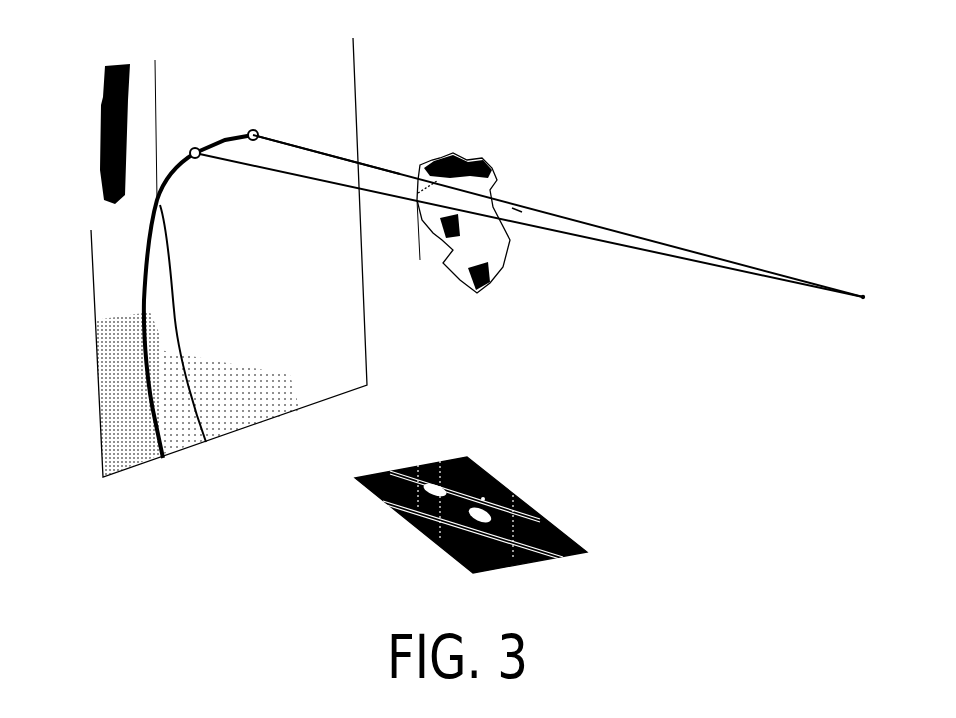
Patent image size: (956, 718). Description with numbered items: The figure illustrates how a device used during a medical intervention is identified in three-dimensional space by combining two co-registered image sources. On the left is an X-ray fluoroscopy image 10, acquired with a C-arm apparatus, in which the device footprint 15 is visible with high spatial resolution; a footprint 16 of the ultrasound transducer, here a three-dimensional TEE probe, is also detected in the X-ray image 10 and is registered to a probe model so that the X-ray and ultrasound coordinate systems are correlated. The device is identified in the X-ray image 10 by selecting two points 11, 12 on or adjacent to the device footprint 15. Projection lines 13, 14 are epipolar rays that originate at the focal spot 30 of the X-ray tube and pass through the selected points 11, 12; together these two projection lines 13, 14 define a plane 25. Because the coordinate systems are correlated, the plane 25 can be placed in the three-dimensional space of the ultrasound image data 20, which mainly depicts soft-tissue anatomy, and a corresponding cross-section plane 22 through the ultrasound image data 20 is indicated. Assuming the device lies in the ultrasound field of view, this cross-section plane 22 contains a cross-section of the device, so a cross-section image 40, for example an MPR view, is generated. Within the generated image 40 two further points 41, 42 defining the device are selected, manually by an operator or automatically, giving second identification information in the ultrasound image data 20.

The X-ray fluoroscopy image 10 is at (240, 440).
The first selected point 11 is at (196, 160).
The second selected point 12 is at (256, 129).
The first projection line 13 is at (529, 237).
The second projection line 14 is at (600, 283).
The device footprint 15 is at (227, 112).
The footprint of the ultrasound transducer 16 is at (100, 148).
The ultrasound image data 20 is at (473, 158).
The cross-section plane 22 is at (519, 213).
The plane 25 is at (388, 160).
The focal spot 30 is at (864, 298).
The cross-section image 40 is at (425, 443).
The first further point 41 is at (457, 527).
The second further point 42 is at (483, 497).